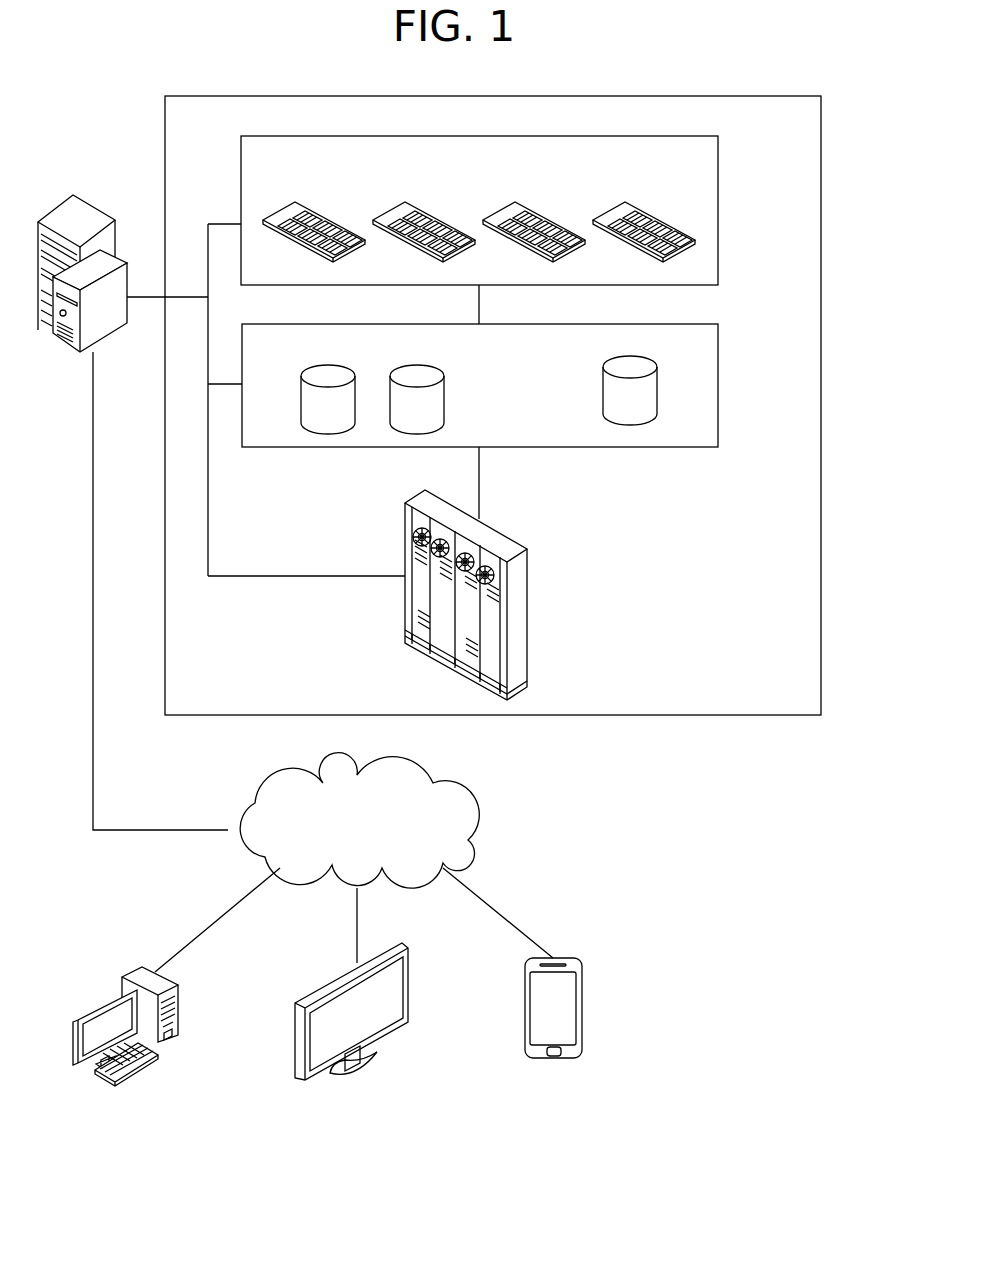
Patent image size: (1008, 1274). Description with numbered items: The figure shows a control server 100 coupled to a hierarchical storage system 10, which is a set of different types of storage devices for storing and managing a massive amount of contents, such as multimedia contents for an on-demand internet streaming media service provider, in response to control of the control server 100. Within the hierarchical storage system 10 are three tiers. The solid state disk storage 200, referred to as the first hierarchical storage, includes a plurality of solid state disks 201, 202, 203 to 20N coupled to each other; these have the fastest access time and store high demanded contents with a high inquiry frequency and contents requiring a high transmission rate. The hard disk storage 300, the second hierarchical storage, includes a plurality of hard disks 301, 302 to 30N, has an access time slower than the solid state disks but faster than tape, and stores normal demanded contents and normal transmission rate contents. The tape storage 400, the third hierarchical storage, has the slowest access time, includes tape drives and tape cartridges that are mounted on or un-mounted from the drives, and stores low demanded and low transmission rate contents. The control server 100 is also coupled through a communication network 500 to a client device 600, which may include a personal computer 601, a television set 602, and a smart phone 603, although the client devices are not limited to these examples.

The hierarchical storage system 10 is at (821, 190).
The control server 100 is at (95, 212).
The solid state disk storage 200 is at (662, 136).
The solid state disk 201 is at (322, 207).
The solid state disk 202 is at (432, 207).
The solid state disk 203 is at (542, 207).
The solid state disk 20N is at (652, 207).
The hard disk storage 300 is at (660, 324).
The hard disk 301 is at (333, 436).
The hard disk 302 is at (422, 436).
The hard disk 30N is at (648, 430).
The tape storage 400 is at (522, 542).
The communication network 500 is at (417, 765).
The client device 600 is at (553, 1093).
The personal computer 601 is at (178, 1007).
The television set 602 is at (408, 992).
The smart phone 603 is at (583, 1002).